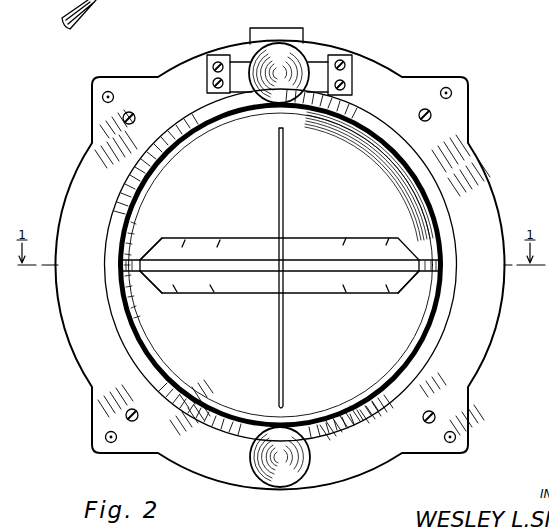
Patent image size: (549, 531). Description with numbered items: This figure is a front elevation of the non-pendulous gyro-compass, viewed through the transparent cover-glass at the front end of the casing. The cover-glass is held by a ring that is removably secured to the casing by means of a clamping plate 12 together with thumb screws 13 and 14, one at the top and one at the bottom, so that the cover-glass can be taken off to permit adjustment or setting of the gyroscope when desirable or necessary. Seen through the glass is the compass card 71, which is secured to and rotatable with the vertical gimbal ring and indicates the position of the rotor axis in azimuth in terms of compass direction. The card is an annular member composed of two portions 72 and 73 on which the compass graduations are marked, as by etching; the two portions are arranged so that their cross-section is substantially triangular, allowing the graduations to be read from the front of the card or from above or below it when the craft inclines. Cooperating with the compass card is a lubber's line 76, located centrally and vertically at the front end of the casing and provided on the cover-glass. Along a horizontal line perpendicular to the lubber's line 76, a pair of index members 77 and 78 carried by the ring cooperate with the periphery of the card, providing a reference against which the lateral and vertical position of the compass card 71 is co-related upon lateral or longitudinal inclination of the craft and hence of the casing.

The clamping plate 12 is at (318, 60).
The thumb screw 13 is at (250, 53).
The thumb screw 14 is at (296, 472).
The compass card 71 is at (246, 238).
The first portion of compass card 72 is at (158, 246).
The second portion of compass card 73 is at (247, 295).
The lubber's line 76 is at (287, 200).
The index member 77 is at (134, 278).
The index member 78 is at (424, 276).